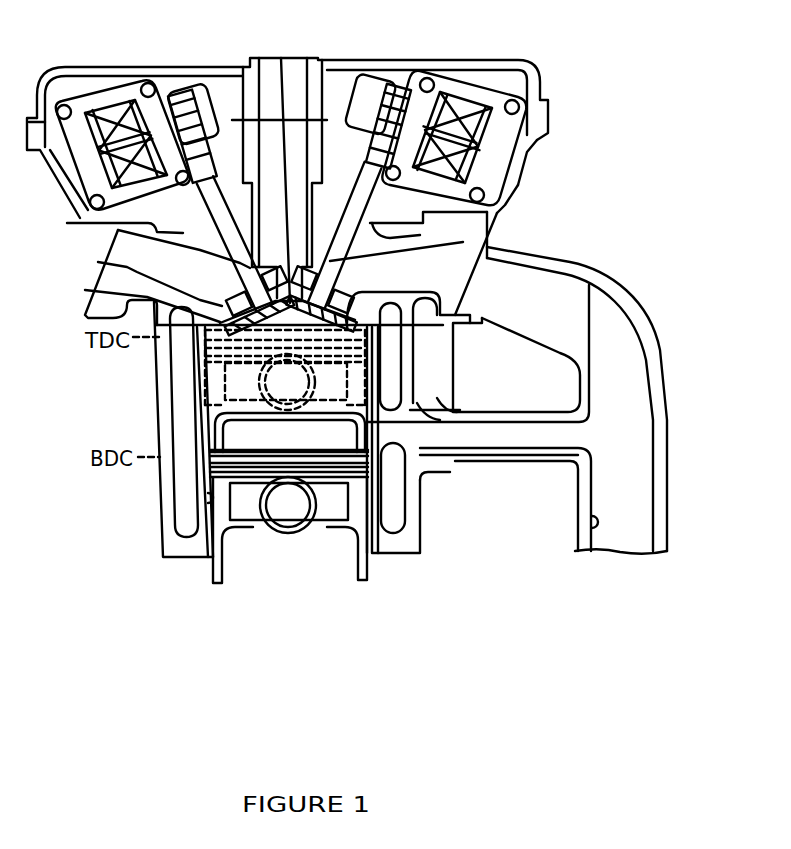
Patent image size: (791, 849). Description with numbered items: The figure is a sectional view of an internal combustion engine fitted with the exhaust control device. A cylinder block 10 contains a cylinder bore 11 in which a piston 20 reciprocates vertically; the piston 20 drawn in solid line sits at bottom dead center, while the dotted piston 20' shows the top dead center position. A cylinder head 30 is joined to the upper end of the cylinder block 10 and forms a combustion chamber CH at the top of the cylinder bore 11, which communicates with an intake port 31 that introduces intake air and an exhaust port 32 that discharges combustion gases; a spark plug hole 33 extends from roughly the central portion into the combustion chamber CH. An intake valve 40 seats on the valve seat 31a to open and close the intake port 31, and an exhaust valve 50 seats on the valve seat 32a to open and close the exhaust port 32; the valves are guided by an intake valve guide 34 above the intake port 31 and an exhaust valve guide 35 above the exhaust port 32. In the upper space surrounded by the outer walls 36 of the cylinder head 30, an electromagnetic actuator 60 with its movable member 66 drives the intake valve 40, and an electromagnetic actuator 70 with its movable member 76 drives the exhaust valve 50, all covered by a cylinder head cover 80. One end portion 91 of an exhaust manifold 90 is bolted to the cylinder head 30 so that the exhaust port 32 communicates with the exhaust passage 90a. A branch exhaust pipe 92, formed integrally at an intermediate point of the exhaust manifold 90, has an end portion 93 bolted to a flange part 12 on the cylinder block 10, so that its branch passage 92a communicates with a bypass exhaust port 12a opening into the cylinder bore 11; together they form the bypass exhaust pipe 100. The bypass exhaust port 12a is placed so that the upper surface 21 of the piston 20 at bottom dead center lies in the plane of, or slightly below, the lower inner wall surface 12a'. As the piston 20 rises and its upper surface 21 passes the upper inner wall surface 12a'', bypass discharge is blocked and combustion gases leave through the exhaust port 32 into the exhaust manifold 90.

The cylinder block 10 is at (162, 535).
The cylinder bore 11 is at (205, 498).
The flange part 12 is at (430, 400).
The bypass exhaust port 12a is at (466, 392).
The lower inner wall surface of the bypass exhaust port 12a' is at (441, 501).
The upper inner wall surface of the bypass exhaust port 12a'' is at (433, 383).
The piston 20 is at (289, 511).
The piston at top dead center 20' is at (237, 370).
The upper surface of the piston 21 is at (208, 452).
The cylinder head 30 is at (84, 315).
The intake port 31 is at (105, 263).
The valve seat of the intake port 31a is at (100, 291).
The exhaust port 32 is at (503, 236).
The valve seat of the exhaust port 32a is at (421, 327).
The spark plug hole 33 is at (281, 58).
The intake valve guide 34 is at (118, 231).
The exhaust valve guide 35 is at (490, 211).
The outer walls of the cylinder head 36 is at (533, 155).
The intake valve 40 is at (80, 223).
The exhaust valve 50 is at (514, 192).
The electromagnetic actuator 60 is at (124, 80).
The movable member 66 is at (170, 95).
The electromagnetic actuator 70 is at (465, 79).
The movable member 76 is at (401, 85).
The cylinder head cover 80 is at (352, 60).
The exhaust manifold 90 is at (591, 266).
The exhaust passage 90a is at (583, 530).
The one end portion of the exhaust manifold 91 is at (501, 245).
The branch exhaust pipe 92 is at (537, 410).
The branch passage 92a is at (550, 446).
The end portion of the branch exhaust pipe 93 is at (453, 468).
The bypass exhaust pipe 100 is at (517, 460).
The combustion chamber CH is at (203, 347).